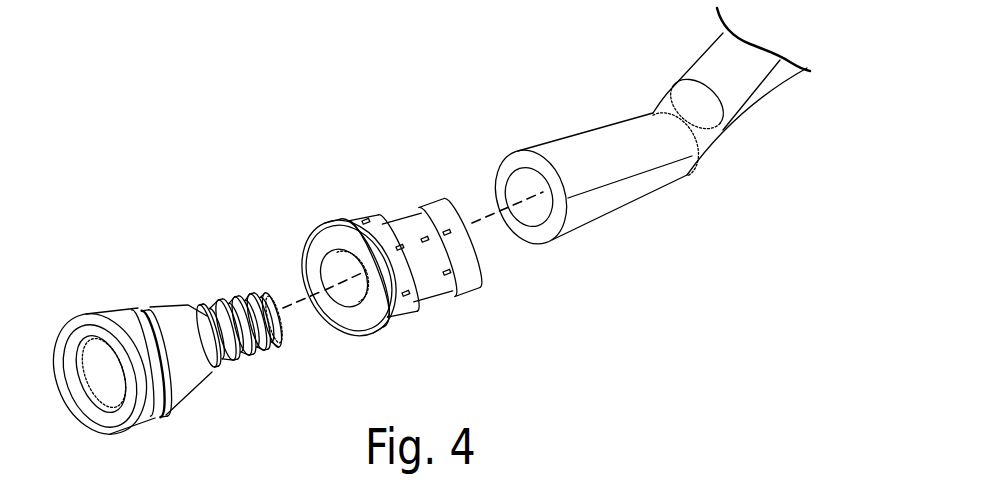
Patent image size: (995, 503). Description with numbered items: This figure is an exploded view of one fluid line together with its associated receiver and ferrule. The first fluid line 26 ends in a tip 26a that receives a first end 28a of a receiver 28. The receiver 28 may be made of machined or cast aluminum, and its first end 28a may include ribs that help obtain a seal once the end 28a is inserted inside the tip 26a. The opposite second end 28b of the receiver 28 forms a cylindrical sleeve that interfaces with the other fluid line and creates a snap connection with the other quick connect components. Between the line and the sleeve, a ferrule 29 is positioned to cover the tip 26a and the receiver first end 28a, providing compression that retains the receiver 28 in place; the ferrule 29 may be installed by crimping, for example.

The first fluid line 26 is at (647, 130).
The tip 26a is at (577, 155).
The receiver 28 is at (161, 356).
The first end 28a is at (239, 297).
The second end 28b is at (147, 425).
The ferrule 29 is at (396, 212).